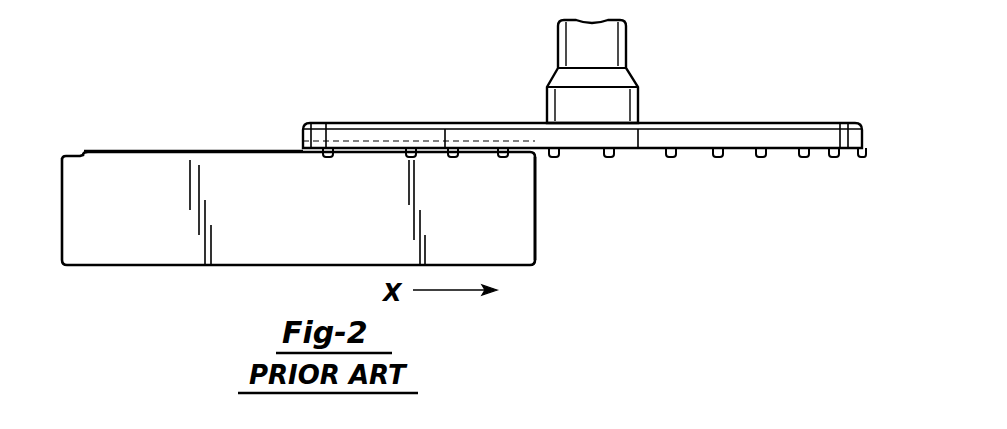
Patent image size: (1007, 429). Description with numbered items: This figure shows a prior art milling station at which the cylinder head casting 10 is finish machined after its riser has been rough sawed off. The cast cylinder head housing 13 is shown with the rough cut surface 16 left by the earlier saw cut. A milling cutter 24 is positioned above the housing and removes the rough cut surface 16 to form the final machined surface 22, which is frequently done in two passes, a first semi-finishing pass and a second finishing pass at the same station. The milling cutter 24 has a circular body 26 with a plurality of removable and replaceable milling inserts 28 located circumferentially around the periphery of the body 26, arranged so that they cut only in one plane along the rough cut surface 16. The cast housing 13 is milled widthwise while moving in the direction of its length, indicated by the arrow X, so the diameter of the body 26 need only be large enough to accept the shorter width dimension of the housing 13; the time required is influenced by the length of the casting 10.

The cylinder head casting 10 is at (499, 263).
The cast cylinder head housing 13 is at (537, 243).
The rough cut surface 16 is at (247, 150).
The final machined surface 22 is at (382, 150).
The milling cutter 24 is at (657, 182).
The circular body 26 is at (689, 150).
The milling inserts 28 is at (760, 158).